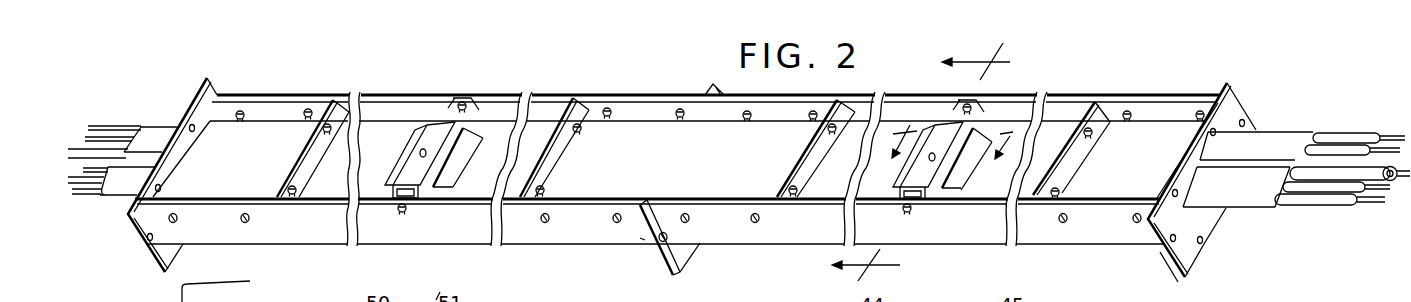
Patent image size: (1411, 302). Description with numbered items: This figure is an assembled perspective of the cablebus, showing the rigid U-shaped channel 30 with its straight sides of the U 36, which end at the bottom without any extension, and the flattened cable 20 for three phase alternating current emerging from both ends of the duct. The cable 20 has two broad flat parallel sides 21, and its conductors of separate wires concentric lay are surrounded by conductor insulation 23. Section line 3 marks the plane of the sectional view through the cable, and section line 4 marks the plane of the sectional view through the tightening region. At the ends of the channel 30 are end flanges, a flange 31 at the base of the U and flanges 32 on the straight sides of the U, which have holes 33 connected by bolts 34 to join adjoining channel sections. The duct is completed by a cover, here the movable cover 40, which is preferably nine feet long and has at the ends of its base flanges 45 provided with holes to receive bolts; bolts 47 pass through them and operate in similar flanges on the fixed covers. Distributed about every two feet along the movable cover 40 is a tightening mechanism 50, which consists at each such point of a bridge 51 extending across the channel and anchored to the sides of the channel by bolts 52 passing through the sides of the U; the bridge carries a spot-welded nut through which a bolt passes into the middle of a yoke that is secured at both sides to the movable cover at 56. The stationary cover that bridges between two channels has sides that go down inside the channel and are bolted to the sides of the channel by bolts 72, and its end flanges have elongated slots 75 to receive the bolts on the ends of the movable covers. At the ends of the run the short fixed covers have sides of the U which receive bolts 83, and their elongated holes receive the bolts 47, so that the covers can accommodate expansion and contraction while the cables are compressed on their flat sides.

The section line 3- 3 is at (930, 162).
The section line 4- 4 is at (944, 155).
The flattened cable 20 is at (121, 200).
The broad flat parallel sides 21 is at (157, 140).
The conductor insulation 23 is at (100, 158).
The channel 30 is at (467, 227).
The end flange at base of the U 31 is at (1197, 247).
The end flange on straight sides of the U 32 is at (1180, 252).
The holes 33 is at (1173, 250).
The bolts 34 is at (658, 255).
The sides of the U 36 is at (595, 235).
The movable cover 40 is at (375, 177).
The flanges 45 is at (1064, 139).
The bolts 47 is at (325, 132).
The tightening mechanism 50 is at (435, 137).
The bridge 51 is at (473, 110).
The bolts 52 is at (403, 213).
The yoke securing points 56 is at (463, 163).
The bolts 72 is at (754, 228).
The elongated slots 75 is at (792, 174).
The bolts 83 is at (178, 221).